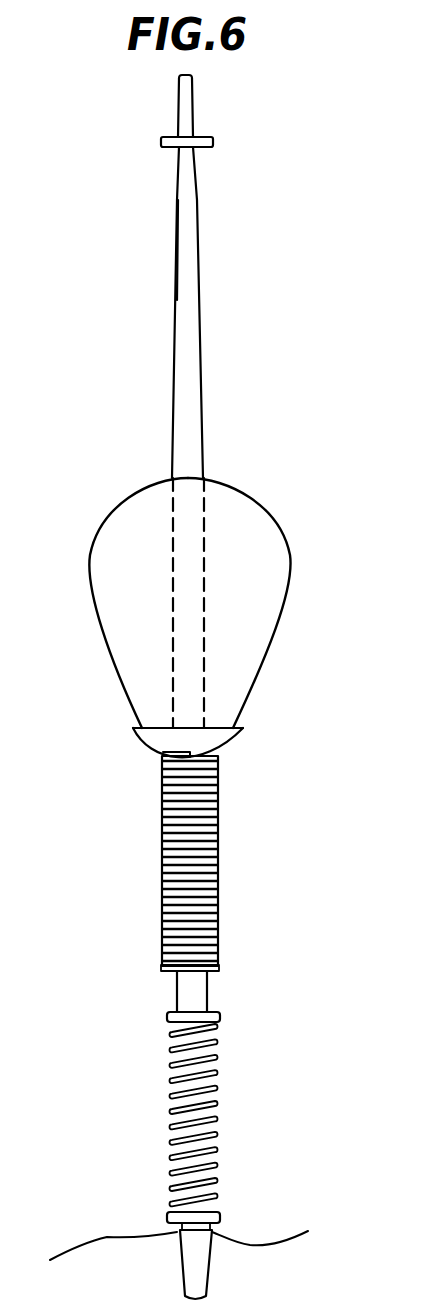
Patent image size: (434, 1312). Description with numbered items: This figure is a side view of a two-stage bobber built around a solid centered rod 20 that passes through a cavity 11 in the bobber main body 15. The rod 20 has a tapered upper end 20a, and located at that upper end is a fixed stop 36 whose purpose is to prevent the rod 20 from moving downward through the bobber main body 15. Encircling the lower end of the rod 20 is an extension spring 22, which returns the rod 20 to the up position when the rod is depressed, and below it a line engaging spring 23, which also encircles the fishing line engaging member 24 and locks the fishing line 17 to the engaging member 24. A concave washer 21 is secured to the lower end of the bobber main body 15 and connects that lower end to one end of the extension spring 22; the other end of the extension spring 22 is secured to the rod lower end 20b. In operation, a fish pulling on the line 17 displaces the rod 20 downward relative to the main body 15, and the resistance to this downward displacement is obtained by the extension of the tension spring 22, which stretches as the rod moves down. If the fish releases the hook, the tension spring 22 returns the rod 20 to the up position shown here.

The cavity 11 is at (190, 647).
The bobber main body 15 is at (265, 555).
The fishing line 17 is at (107, 1237).
The solid centered rod 20 is at (200, 402).
The tapered upper end 20a is at (198, 307).
The rod lower end 20b is at (197, 997).
The concave washer 21 is at (212, 742).
The extension spring 22 is at (200, 868).
The line engaging spring 23 is at (222, 1077).
The fishing line engaging member 24 is at (212, 1195).
The fixed stop 36 is at (213, 140).